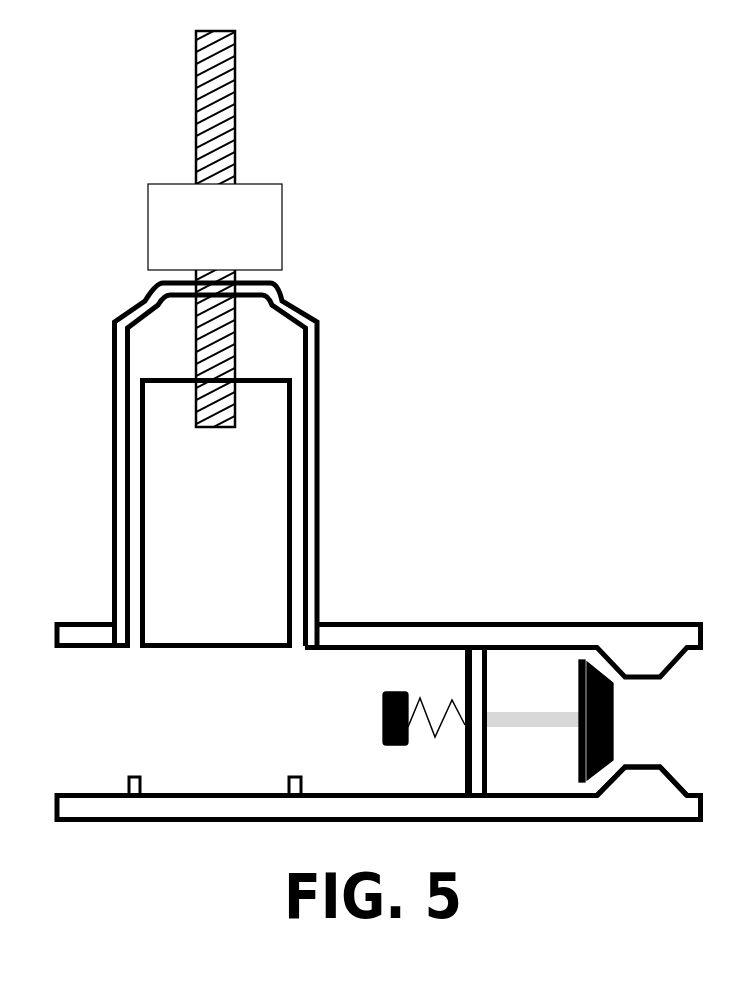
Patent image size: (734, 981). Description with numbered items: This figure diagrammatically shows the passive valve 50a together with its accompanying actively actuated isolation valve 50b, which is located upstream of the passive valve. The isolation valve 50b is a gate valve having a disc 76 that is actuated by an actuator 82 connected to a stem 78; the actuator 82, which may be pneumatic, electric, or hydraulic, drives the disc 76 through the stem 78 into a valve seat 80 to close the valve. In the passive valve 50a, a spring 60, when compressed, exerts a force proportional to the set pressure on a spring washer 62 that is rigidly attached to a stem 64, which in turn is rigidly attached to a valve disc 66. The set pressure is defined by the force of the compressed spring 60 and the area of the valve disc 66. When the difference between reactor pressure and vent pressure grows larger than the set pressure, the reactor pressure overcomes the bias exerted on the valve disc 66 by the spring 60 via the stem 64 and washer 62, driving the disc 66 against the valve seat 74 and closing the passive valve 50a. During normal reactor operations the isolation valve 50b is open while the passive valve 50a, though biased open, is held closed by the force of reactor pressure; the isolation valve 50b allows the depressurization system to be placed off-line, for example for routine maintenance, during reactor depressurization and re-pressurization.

The stem 78 is at (235, 142).
The actuator 82 is at (229, 244).
The disc 76 is at (232, 496).
The actively actuated isolation valve 50b is at (319, 450).
The passive valve 50a is at (522, 638).
The spring 60 is at (452, 705).
The spring washer 62 is at (383, 722).
The stem 64 is at (545, 723).
The valve disc 66 is at (613, 717).
The valve seat 74 is at (615, 777).
The valve seat 80 is at (301, 640).